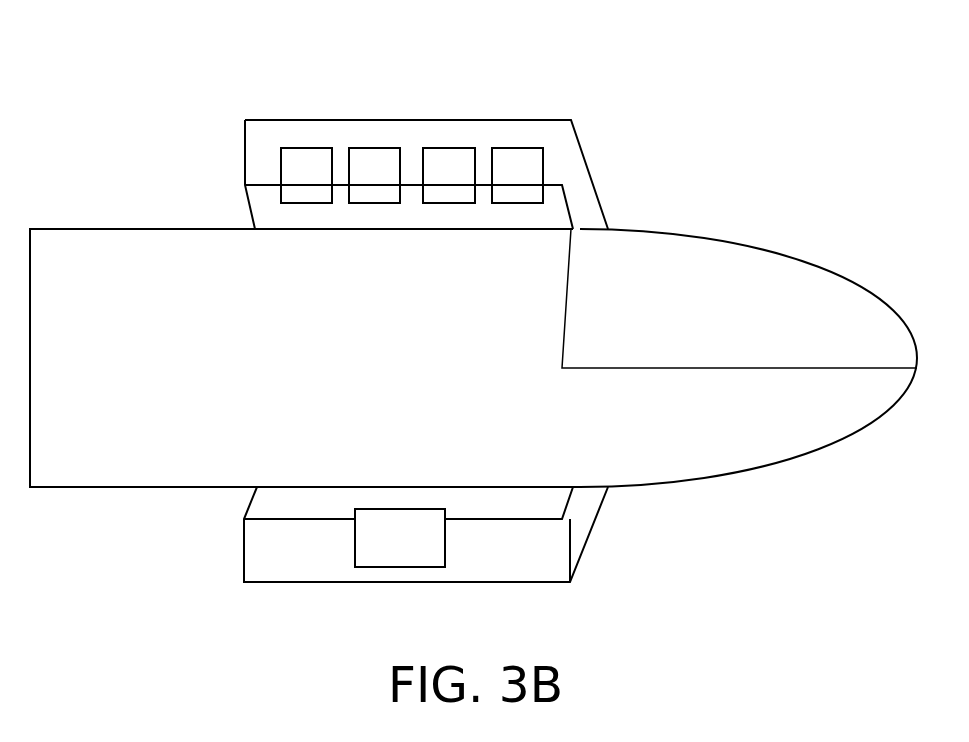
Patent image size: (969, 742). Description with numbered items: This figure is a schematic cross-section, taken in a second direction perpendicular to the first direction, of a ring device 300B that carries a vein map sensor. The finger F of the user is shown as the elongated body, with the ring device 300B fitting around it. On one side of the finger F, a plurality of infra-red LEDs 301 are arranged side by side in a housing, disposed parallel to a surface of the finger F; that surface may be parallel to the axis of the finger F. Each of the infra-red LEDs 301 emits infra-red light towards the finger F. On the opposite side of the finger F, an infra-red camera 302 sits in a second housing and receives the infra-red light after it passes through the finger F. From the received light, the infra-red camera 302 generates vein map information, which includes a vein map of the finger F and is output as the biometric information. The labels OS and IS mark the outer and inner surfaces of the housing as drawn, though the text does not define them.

The infra-red light emitting diodes 301 is at (307, 148).
The infra-red camera 302 is at (355, 538).
The outer surface OS is at (583, 150).
The inner surface IS is at (568, 207).
The finger F is at (862, 287).
The ring device 300B is at (805, 623).